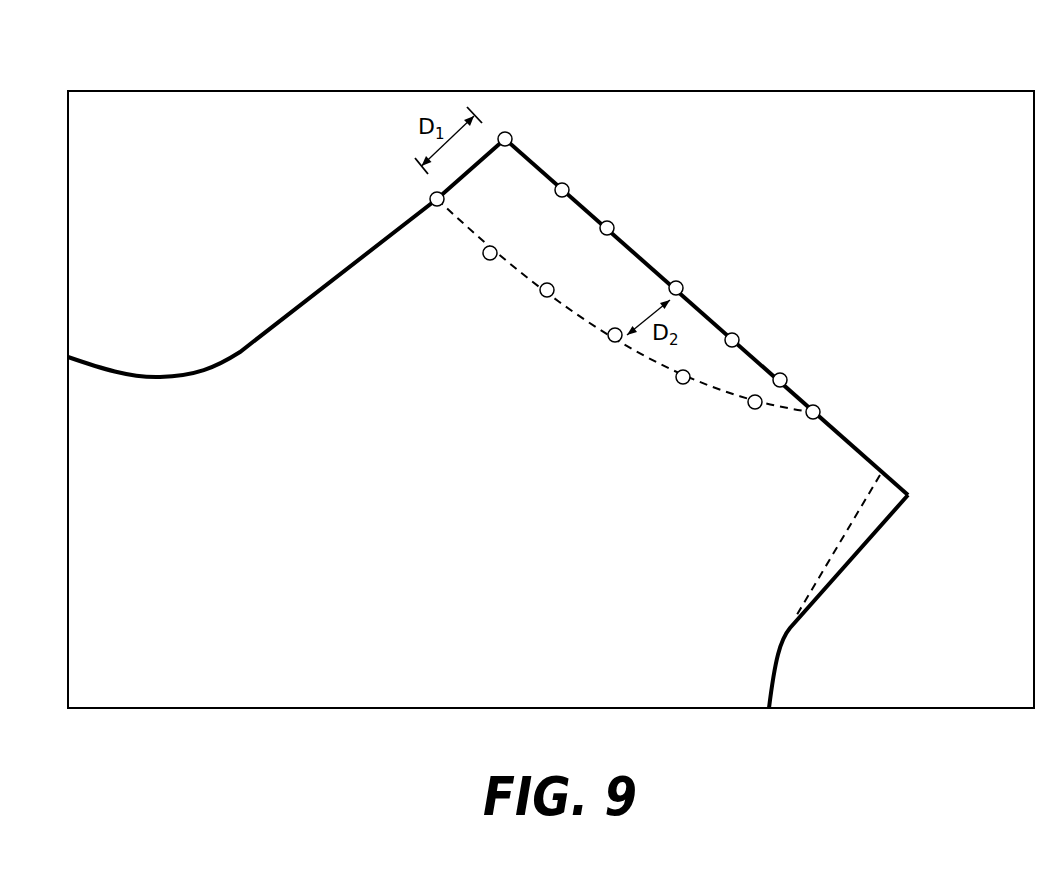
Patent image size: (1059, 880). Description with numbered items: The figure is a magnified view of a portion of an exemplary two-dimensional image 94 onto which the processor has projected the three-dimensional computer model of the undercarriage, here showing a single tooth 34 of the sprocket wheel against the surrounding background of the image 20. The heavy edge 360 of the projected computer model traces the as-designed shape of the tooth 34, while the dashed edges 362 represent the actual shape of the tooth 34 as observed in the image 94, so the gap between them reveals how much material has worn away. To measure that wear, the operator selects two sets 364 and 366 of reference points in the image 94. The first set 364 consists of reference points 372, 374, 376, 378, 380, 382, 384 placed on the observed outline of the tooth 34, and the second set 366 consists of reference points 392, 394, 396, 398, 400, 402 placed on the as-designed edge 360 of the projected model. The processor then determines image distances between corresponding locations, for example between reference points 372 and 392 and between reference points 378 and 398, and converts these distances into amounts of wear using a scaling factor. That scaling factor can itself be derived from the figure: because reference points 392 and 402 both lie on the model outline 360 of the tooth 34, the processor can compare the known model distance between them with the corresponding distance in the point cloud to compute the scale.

The panel 20 is at (356, 588).
The tooth 34 is at (833, 470).
The 2D image 94 is at (858, 88).
The edge 360 is at (724, 331).
The edges 362 is at (580, 315).
The set of reference points 364 is at (568, 378).
The set of reference points 366 is at (643, 200).
The reference point 372 is at (430, 199).
The reference point 374 is at (484, 257).
The reference point 376 is at (541, 293).
The reference point 378 is at (613, 342).
The reference point 380 is at (683, 385).
The reference point 382 is at (753, 410).
The reference point 384 is at (820, 412).
The reference point 392 is at (510, 135).
The reference point 394 is at (568, 186).
The reference point 396 is at (614, 230).
The reference point 398 is at (683, 287).
The reference point 400 is at (740, 341).
The reference point 402 is at (787, 379).